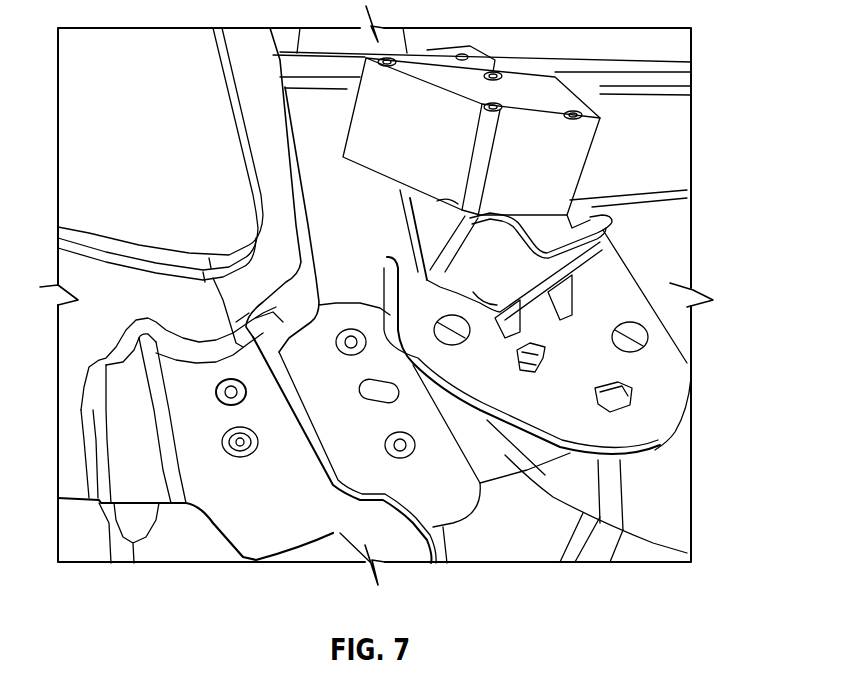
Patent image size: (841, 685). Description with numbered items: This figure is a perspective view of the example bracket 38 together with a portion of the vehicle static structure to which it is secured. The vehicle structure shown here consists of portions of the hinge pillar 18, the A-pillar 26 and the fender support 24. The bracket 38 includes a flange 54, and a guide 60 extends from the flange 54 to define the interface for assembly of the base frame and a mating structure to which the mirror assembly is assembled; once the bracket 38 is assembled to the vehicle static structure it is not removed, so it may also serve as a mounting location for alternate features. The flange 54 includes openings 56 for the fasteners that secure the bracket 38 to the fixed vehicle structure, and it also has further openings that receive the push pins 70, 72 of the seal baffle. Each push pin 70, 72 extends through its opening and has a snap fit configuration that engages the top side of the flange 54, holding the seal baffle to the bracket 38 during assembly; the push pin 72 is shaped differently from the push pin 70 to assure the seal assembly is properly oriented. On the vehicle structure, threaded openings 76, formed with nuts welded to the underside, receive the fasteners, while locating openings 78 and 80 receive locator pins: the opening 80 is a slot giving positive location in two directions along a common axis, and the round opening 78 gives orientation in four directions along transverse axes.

The hinge pillar 18 is at (256, 530).
The fender support 24 is at (513, 533).
The A-pillar 26 is at (273, 258).
The bracket 38 is at (661, 166).
The flange 54 is at (613, 268).
The openings 56 is at (453, 333).
The guide 60 is at (567, 150).
The push pin 70 is at (613, 400).
The push pin 72 is at (537, 363).
The threaded openings 76 is at (351, 332).
The locating opening 78 is at (219, 385).
The locating opening 80 is at (370, 392).